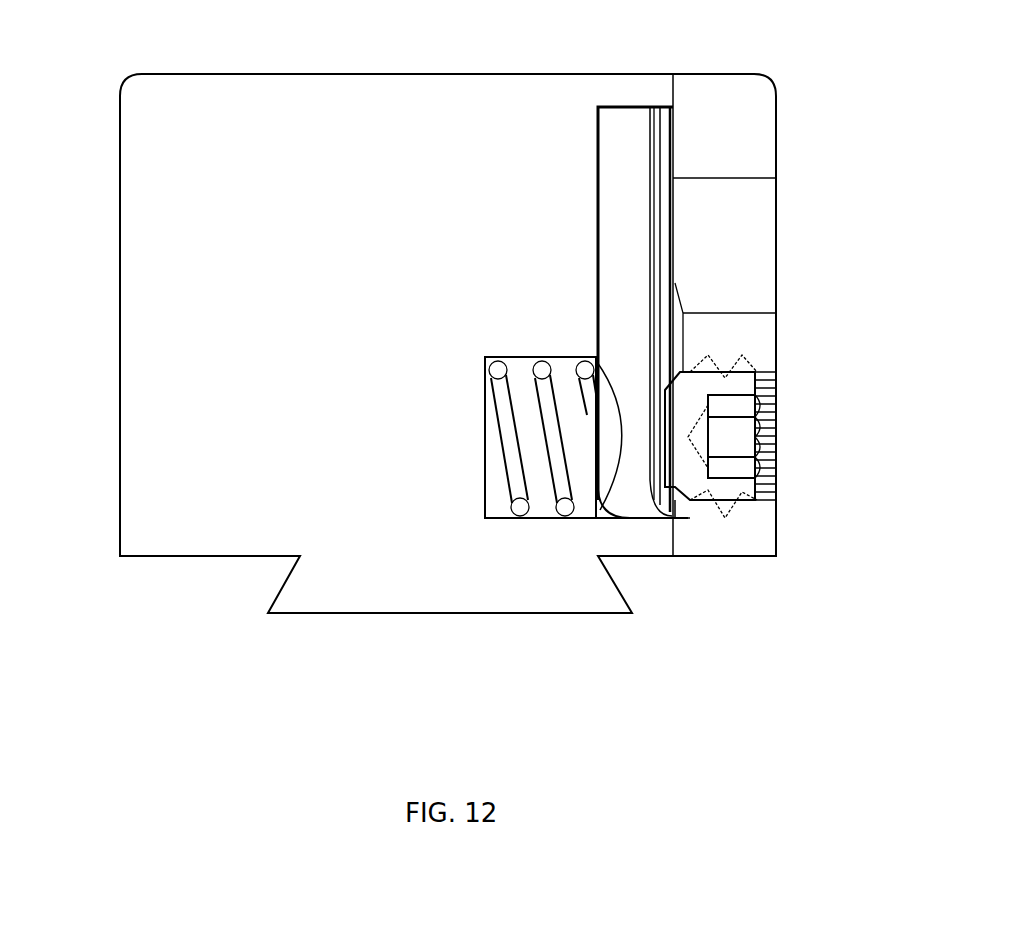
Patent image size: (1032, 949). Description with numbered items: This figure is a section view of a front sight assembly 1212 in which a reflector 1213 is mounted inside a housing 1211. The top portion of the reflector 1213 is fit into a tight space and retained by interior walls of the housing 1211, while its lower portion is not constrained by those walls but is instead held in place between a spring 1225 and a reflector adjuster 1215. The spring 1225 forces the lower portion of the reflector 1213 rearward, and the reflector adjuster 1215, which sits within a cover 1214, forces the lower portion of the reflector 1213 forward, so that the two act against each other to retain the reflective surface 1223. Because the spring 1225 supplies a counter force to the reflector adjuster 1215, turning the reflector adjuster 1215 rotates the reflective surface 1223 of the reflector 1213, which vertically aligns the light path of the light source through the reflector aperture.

The housing 1211 is at (245, 224).
The connector assembly 1212 is at (786, 223).
The reflector 1213 is at (623, 180).
The cover 1214 is at (750, 122).
The reflector adjuster 1215 is at (738, 437).
The reflective surface 1223 is at (677, 240).
The spring 1225 is at (555, 458).